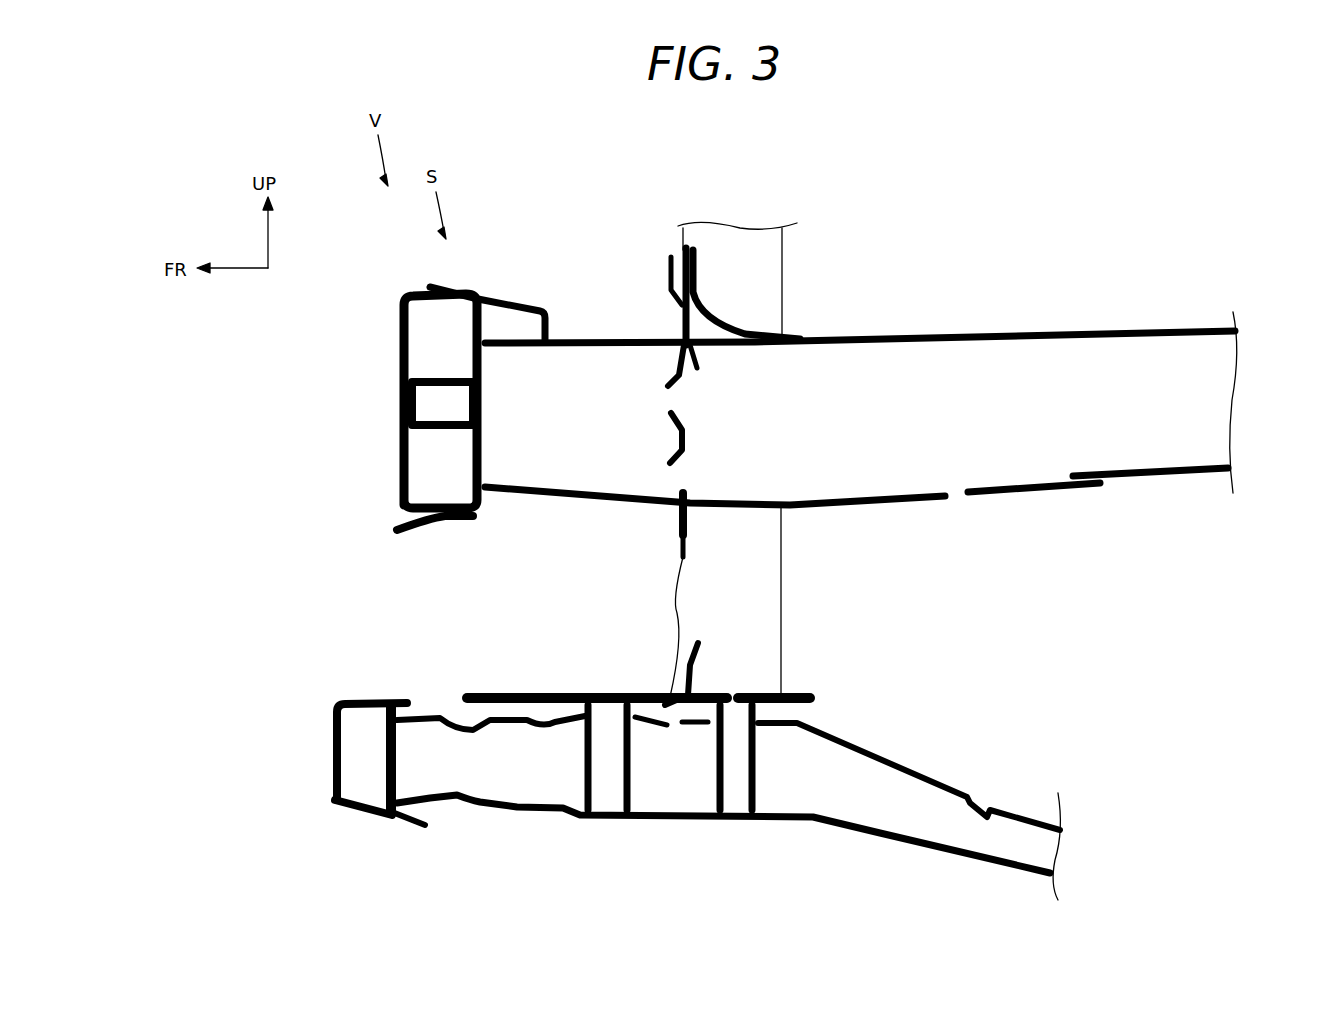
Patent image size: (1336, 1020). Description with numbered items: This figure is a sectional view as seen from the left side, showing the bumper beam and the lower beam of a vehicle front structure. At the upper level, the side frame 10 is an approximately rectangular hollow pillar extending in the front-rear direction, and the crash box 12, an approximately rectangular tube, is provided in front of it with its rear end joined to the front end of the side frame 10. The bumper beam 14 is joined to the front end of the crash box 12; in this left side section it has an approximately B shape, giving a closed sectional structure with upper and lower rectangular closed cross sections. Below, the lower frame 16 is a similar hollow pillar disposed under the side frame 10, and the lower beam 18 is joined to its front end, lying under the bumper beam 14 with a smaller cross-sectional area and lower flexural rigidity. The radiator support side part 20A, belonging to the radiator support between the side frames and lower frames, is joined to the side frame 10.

The side frame 10 is at (996, 328).
The crash box 12 is at (546, 506).
The bumper beam 14 is at (405, 400).
The lower frame 16 is at (862, 742).
The lower beam 18 is at (333, 758).
The radiator support side part 20A is at (786, 266).